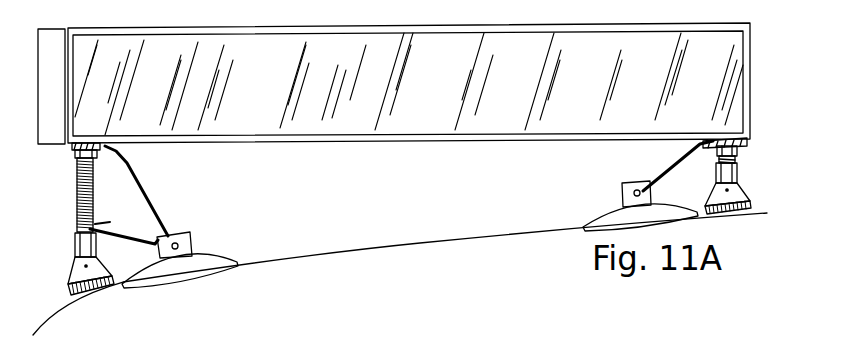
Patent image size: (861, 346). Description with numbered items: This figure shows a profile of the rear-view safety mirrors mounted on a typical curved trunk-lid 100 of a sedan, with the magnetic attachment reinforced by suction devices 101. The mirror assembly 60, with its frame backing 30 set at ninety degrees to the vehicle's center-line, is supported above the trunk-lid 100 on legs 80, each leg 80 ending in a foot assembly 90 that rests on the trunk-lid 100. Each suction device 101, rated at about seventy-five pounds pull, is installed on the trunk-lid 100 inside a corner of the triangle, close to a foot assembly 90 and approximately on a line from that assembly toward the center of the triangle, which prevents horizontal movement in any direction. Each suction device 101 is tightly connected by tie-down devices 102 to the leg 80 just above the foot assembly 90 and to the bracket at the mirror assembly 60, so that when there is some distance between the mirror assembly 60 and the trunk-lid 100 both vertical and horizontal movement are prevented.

The frame backing 30 is at (52, 144).
The mirror assembly 60 is at (421, 156).
The leg 80 is at (58, 213).
The foot assembly 90 is at (58, 259).
The trunk-lid 100 is at (418, 246).
The suction device 101 is at (208, 256).
The tie-down device 102 is at (115, 230).